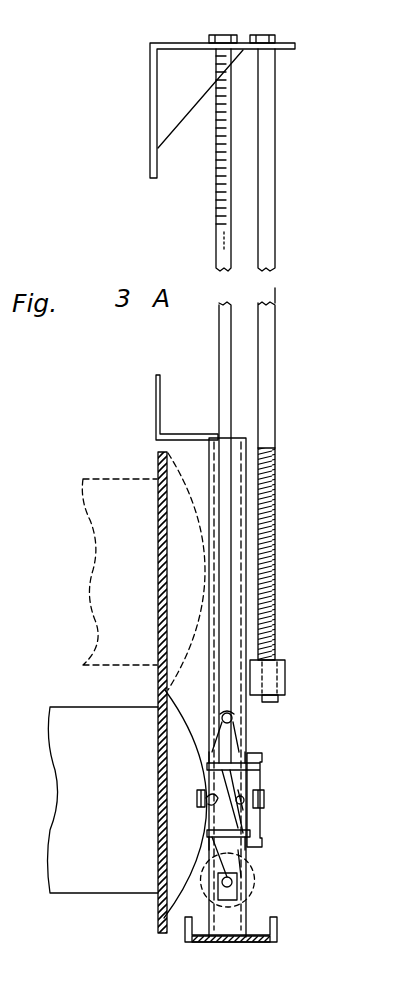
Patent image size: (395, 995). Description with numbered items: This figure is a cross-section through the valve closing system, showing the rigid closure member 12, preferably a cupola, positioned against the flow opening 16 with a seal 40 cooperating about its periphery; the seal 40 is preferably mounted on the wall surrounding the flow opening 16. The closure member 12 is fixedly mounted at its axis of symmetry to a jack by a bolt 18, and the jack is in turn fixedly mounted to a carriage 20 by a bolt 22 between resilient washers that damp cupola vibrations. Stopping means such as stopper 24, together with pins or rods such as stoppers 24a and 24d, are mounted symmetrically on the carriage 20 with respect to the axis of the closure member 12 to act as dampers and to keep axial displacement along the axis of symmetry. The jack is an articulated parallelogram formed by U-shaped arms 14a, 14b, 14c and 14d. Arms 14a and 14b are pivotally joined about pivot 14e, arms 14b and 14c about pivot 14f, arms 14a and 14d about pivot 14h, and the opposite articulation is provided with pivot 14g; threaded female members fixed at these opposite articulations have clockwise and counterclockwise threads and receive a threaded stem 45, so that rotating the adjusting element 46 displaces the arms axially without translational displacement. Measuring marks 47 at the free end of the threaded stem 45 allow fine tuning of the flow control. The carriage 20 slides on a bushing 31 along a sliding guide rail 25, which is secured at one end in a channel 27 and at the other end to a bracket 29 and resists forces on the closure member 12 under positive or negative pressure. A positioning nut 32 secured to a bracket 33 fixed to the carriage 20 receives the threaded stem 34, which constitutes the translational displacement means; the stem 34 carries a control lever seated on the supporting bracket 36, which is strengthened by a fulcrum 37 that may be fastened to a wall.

The closure member 12 is at (158, 690).
The U-shaped arm 14a is at (164, 918).
The U-shaped arm 14b is at (247, 857).
The U-shaped arm 14c is at (240, 782).
The U-shaped arm 14d is at (218, 748).
The pivot 14e is at (240, 887).
The pivot 14f is at (250, 810).
The pivot 14g is at (233, 718).
The pivot 14h is at (210, 806).
The flow opening 16 is at (83, 727).
The bolt 18 is at (197, 797).
The carriage 20 is at (265, 748).
The bolt 22 is at (265, 793).
The stopping means 24 is at (258, 834).
The stopper 24a is at (230, 763).
The stopper 24d is at (218, 831).
The sliding guide rail 25 is at (213, 453).
The channel 27 is at (262, 942).
The bracket 29 is at (156, 415).
The bushing 31 is at (270, 36).
The positioning nut 32 is at (287, 663).
The bracket 33 is at (252, 710).
The stem 34 is at (275, 402).
The supporting bracket 36 is at (150, 84).
The fulcrum 37 is at (173, 106).
The seal 40 is at (160, 548).
The threaded stem 45 is at (221, 376).
The adjusting element 46 is at (212, 35).
The measuring marks 47 is at (215, 177).